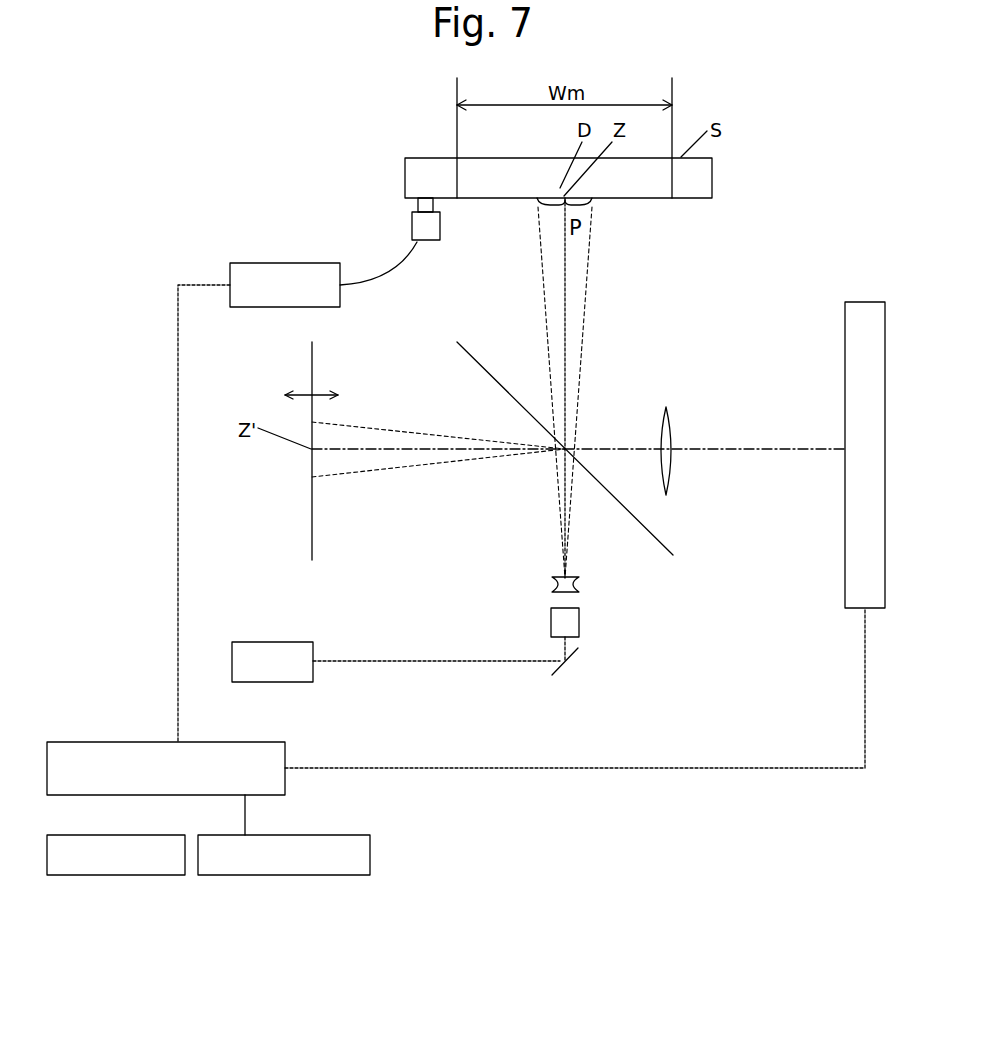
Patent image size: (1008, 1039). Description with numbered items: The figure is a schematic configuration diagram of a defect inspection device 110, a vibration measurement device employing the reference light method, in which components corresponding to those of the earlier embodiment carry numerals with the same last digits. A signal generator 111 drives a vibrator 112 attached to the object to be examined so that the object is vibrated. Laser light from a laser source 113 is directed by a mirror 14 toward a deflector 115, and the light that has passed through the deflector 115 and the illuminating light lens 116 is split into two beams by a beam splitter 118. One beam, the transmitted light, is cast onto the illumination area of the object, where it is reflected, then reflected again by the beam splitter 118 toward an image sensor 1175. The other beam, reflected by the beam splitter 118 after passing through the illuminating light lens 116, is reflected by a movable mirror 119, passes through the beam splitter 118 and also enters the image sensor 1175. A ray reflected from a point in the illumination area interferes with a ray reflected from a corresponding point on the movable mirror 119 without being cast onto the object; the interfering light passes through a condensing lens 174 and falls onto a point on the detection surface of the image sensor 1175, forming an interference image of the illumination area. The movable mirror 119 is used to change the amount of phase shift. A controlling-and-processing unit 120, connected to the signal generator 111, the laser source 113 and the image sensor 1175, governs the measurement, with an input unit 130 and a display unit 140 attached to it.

The defect inspection device 110 is at (672, 847).
The signal generator 111 is at (262, 263).
The vibrator 112 is at (412, 223).
The laser source 113 is at (258, 642).
The deflector 115 is at (550, 630).
The illuminating light lens 116 is at (553, 580).
The beam splitter 118 is at (662, 548).
The movable mirror 119 is at (315, 547).
The condensing lens 174 is at (672, 477).
The image sensor 1175 is at (843, 594).
The controlling-and-processing unit 120 is at (287, 778).
The input unit 130 is at (172, 875).
The display unit 140 is at (317, 875).
The mirror 14 is at (563, 666).